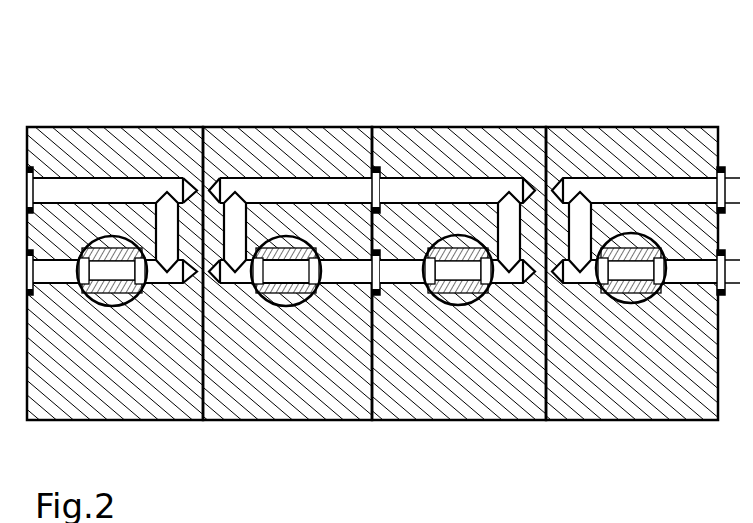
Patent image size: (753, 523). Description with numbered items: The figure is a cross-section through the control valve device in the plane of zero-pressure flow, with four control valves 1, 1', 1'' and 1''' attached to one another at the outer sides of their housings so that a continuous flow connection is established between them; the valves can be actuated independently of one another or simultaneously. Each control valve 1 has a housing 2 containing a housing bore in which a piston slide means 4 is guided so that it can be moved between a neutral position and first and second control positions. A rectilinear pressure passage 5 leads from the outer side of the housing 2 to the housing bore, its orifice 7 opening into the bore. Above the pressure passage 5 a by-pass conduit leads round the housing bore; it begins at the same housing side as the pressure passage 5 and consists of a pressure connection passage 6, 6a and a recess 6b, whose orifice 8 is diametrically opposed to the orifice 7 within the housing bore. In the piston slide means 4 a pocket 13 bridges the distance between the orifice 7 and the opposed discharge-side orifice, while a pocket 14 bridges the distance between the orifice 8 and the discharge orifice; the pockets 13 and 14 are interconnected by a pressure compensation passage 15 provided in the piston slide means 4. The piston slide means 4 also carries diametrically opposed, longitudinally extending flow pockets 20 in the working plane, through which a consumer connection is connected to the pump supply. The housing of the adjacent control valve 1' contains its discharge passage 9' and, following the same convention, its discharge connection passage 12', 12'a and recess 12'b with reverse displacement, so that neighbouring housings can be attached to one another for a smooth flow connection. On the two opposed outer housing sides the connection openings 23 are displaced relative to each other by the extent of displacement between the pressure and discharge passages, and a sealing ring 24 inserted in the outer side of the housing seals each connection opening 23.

The control valve 1 is at (115, 219).
The control valve 1' is at (287, 219).
The control valve 1'' is at (459, 219).
The control valve 1''' is at (632, 219).
The housing 2 is at (160, 150).
The piston slide means 4 is at (112, 279).
The pressure passage 5 is at (53, 272).
The pressure connection passage 6 is at (134, 172).
The pressure connection passage 6a is at (198, 187).
The recess 6b is at (170, 278).
The orifice 7 is at (73, 287).
The orifice 8 is at (147, 273).
The discharge passage 9' is at (290, 367).
The discharge connection passage 12' is at (290, 138).
The discharge connection passage 12'a is at (265, 144).
The recess 12'b is at (244, 367).
The pocket 13 is at (104, 192).
The pocket 14 is at (234, 226).
The pressure compensation passage 15 is at (124, 286).
The flow pockets 20 is at (100, 303).
The connection openings 23 is at (66, 200).
The sealing ring 24 is at (32, 172).